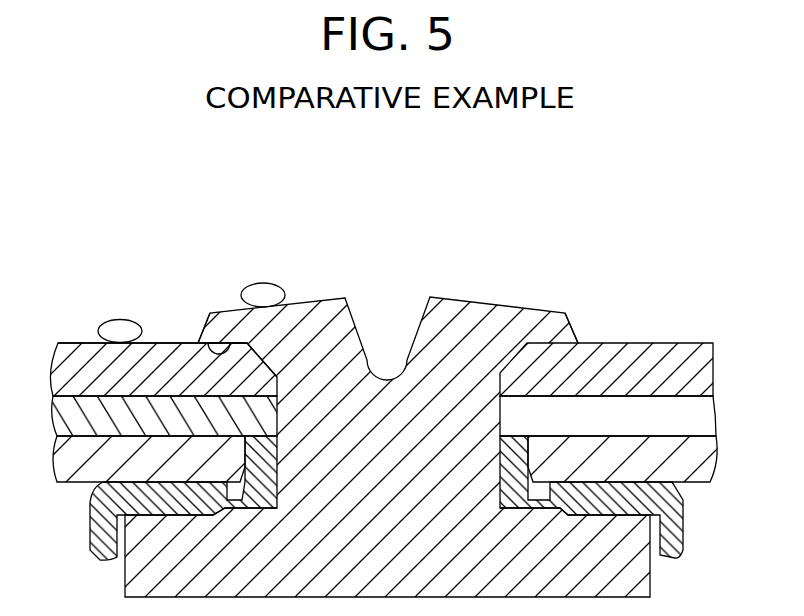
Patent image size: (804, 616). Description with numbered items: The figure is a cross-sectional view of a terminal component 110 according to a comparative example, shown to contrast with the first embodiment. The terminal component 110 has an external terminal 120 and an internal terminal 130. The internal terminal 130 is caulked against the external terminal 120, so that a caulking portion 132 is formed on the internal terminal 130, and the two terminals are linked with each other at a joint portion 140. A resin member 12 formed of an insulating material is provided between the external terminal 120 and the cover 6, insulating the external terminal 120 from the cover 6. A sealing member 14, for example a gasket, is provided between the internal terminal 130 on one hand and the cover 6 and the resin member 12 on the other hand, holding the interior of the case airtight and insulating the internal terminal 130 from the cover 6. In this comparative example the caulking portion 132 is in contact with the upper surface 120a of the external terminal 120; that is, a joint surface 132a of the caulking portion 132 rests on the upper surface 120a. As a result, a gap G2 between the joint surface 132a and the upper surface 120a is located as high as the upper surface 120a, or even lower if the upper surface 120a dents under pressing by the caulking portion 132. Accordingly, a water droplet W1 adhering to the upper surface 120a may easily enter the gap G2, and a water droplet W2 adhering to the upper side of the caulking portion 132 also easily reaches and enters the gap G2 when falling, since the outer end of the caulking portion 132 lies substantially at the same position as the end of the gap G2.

The terminal component 110 is at (166, 210).
The external terminal 120 is at (707, 367).
The upper surface 120a is at (76, 336).
The water droplet W1 is at (115, 320).
The water droplet W2 is at (267, 283).
The gap G2 is at (192, 337).
The caulking portion 132 is at (315, 305).
The joint surface 132a is at (230, 345).
The joint portion 140 is at (585, 328).
The resin member 12 is at (710, 410).
The cover 6 is at (710, 453).
The sealing member 14 is at (677, 522).
The internal terminal 130 is at (645, 567).